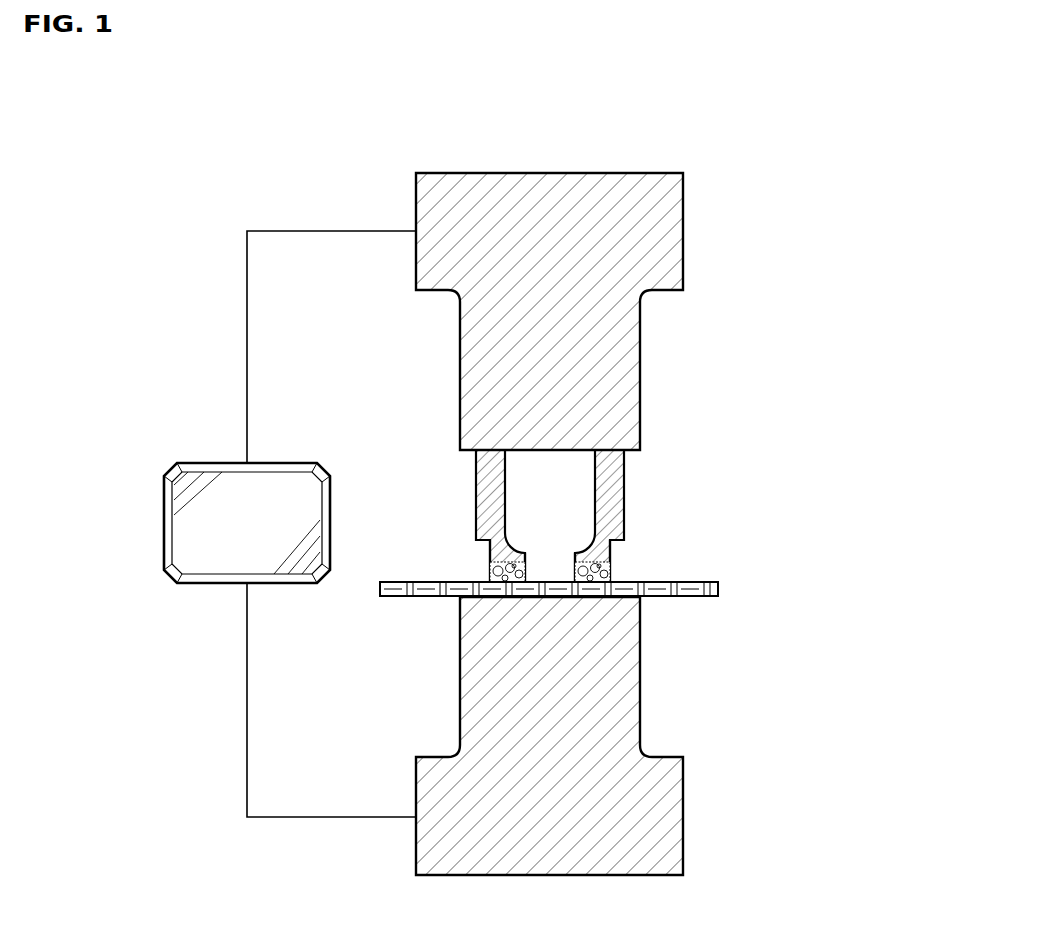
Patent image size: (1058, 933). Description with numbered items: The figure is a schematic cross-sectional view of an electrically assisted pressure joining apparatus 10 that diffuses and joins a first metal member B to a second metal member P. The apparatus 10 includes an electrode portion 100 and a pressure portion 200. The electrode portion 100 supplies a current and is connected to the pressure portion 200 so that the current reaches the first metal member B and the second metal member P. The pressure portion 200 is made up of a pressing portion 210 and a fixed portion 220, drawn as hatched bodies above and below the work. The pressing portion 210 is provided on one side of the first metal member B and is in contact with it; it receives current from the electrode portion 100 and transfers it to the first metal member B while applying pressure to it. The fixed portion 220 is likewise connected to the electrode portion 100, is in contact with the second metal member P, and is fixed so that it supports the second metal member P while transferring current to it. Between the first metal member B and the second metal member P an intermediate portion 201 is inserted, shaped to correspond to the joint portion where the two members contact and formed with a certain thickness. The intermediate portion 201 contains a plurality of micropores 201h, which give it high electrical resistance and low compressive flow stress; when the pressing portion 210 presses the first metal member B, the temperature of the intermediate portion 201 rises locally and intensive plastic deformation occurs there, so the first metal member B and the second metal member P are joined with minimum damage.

The electrically assisted pressure joining apparatus 10 is at (633, 144).
The electrode portion 100 is at (164, 527).
The pressure portion 200 is at (823, 214).
The pressing portion 210 is at (683, 217).
The fixed portion 220 is at (685, 784).
The first metal member B is at (480, 475).
The intermediate portion 201 is at (610, 572).
The micropores 201h is at (485, 577).
The second metal member P is at (407, 598).